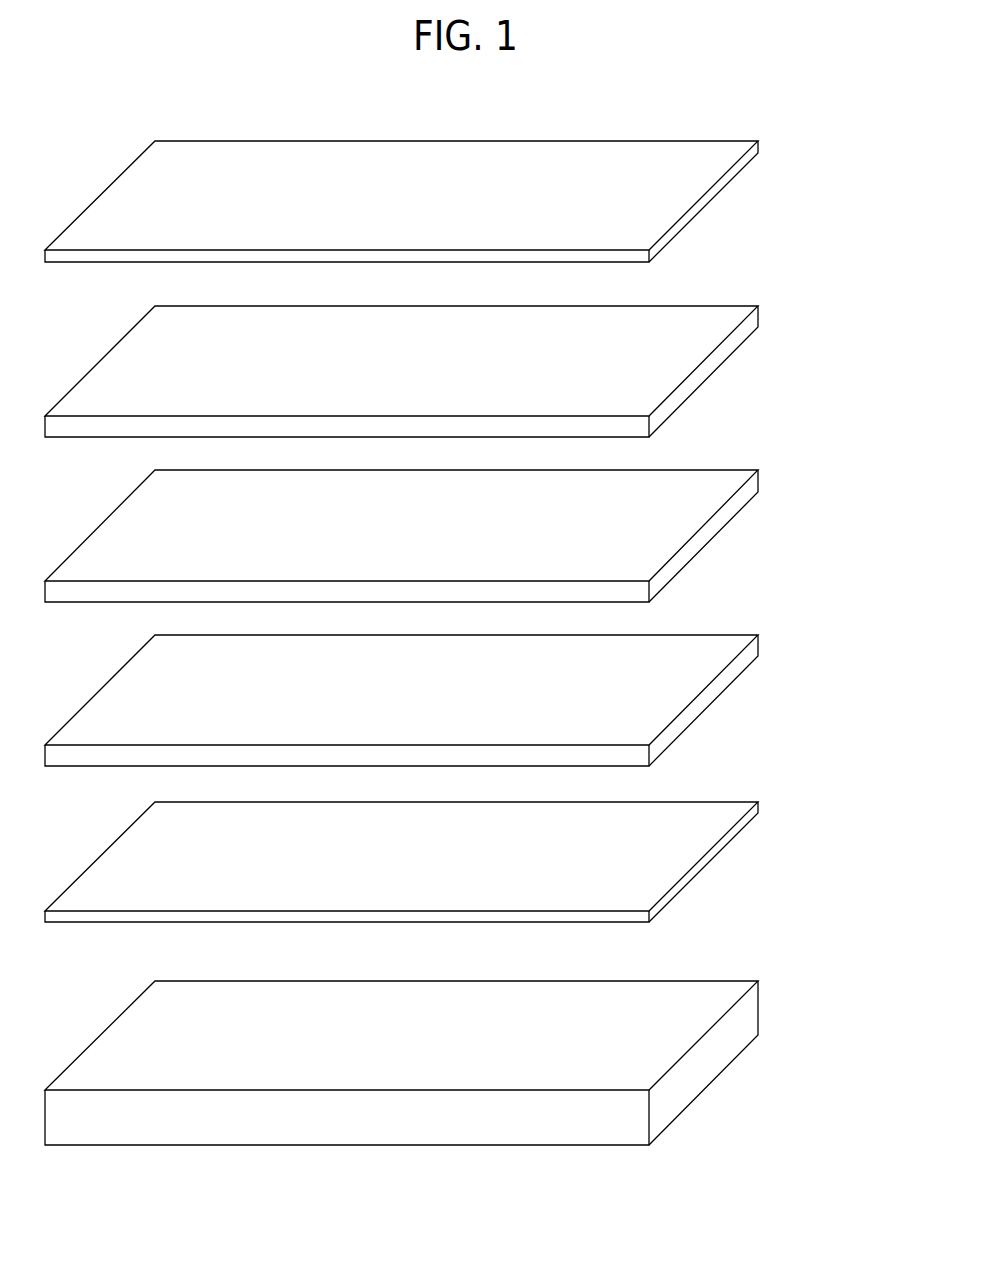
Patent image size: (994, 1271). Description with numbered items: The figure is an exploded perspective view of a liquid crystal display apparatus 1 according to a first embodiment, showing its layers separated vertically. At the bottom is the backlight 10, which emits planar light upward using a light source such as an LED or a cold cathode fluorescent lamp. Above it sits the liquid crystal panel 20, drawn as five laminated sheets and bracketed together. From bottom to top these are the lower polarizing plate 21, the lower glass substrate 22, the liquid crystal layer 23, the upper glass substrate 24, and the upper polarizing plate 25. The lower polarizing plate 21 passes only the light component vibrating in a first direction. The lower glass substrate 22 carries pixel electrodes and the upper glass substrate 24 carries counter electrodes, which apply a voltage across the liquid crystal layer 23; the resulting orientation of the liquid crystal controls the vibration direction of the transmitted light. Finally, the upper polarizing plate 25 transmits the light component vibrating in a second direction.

The liquid crystal display apparatus 1 is at (784, 1216).
The backlight 10 is at (730, 1035).
The liquid crystal panel 20 is at (842, 130).
The lower polarizing plate 21 is at (732, 830).
The lower glass substrate 22 is at (731, 669).
The liquid crystal layer 23 is at (732, 508).
The upper glass substrate 24 is at (733, 340).
The upper polarizing plate 25 is at (733, 173).